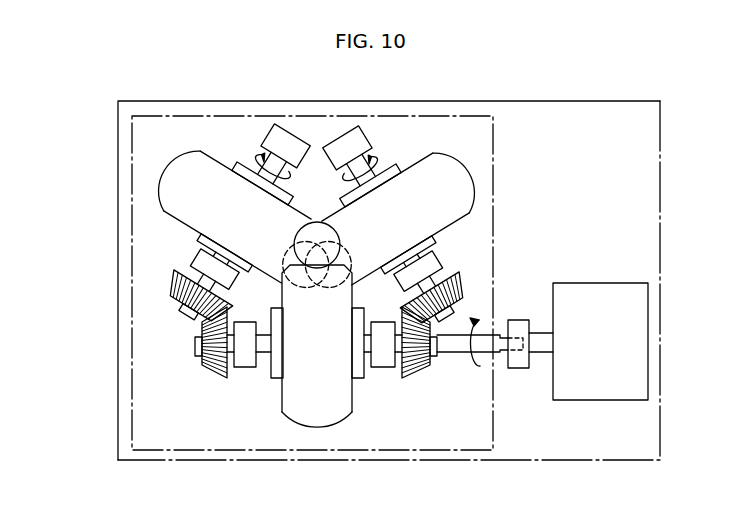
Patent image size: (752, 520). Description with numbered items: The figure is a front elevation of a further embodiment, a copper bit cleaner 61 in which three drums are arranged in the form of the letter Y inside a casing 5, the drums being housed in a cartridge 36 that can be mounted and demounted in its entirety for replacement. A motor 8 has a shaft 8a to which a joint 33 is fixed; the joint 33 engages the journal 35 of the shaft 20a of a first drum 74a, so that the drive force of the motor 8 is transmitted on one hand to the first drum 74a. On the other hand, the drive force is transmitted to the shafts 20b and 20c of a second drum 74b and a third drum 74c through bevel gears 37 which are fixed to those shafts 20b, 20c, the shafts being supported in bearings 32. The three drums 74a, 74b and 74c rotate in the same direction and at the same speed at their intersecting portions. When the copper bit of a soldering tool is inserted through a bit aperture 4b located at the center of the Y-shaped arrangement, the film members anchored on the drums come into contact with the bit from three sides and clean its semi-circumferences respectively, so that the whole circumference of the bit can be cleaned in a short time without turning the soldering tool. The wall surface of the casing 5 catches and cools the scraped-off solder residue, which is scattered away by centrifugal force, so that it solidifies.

The copper bit cleaner 61 is at (417, 247).
The casing 5 is at (658, 217).
The cartridge 36 is at (233, 122).
The first drum 74a is at (300, 427).
The second drum 74b is at (473, 183).
The third drum 74c is at (163, 182).
The bit aperture 4b is at (306, 236).
The shaft of first drum 20a is at (447, 354).
The shaft of second drum 20b is at (368, 160).
The shaft of third drum 20c is at (266, 158).
The bearings 32 is at (284, 130).
The bevel gears 37 is at (170, 292).
The joint 33 is at (517, 320).
The journal 35 is at (518, 369).
The motor 8 is at (634, 358).
The shaft of motor 8a is at (538, 354).